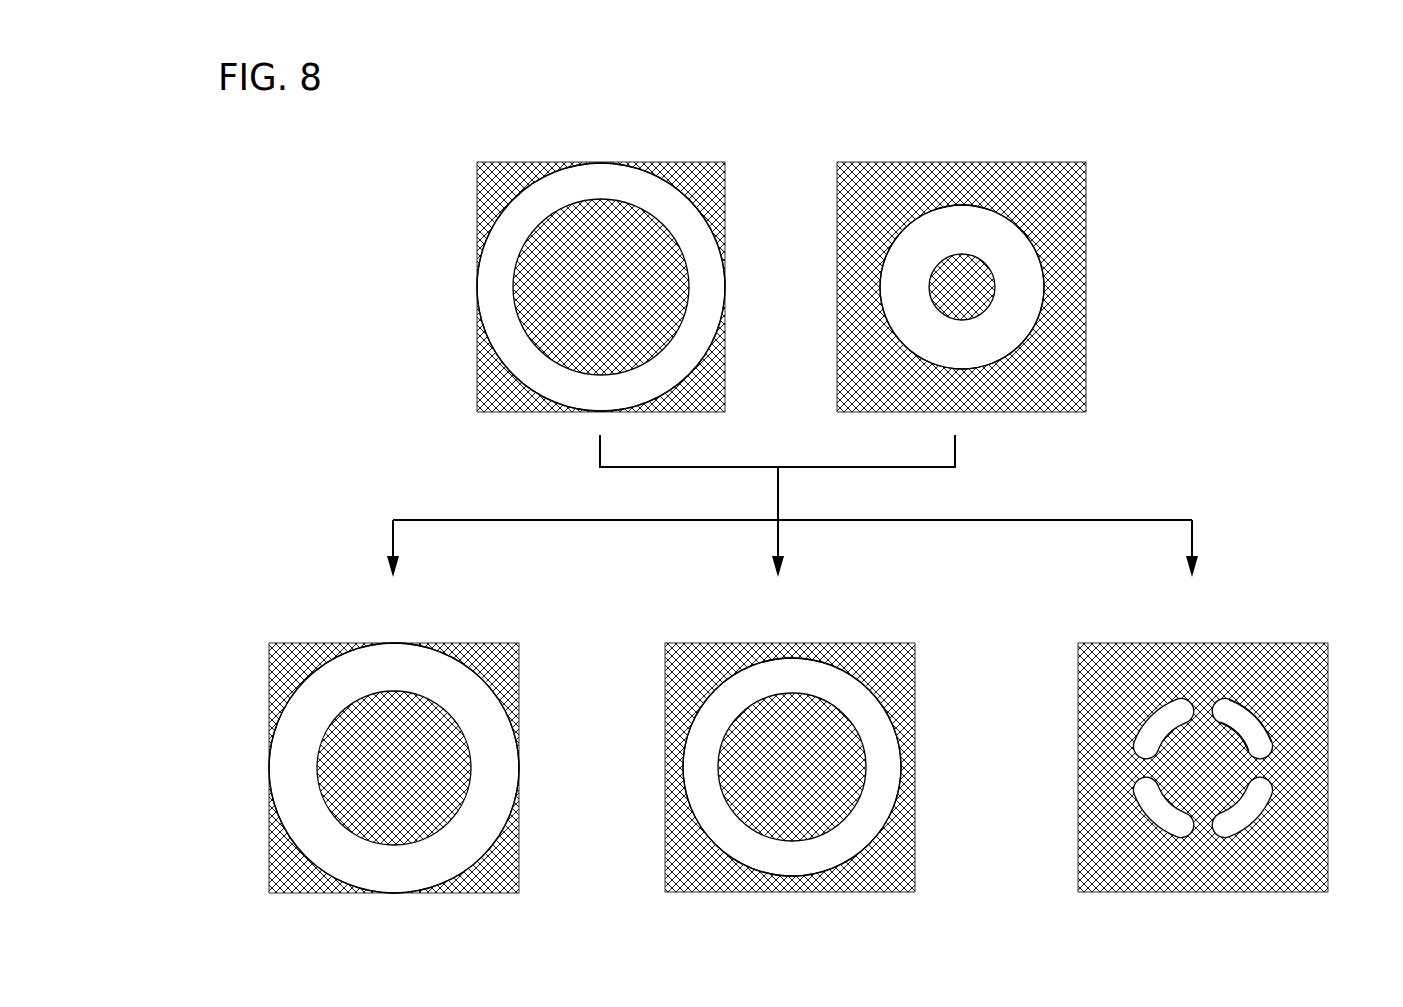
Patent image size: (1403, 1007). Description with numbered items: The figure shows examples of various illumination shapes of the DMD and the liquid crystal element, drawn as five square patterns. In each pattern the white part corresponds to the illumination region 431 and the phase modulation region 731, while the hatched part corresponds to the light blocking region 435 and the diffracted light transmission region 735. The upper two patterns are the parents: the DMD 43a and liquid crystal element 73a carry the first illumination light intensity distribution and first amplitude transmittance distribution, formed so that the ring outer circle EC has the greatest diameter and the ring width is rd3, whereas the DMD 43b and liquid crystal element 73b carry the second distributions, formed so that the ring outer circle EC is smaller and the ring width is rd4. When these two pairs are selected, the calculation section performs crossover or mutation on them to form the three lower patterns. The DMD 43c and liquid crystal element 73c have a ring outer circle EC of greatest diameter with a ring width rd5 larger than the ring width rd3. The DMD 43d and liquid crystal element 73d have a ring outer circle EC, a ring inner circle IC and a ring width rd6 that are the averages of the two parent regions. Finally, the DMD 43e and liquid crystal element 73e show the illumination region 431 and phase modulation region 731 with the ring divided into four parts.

The DMD 43a is at (601, 238).
The liquid crystal element 73a is at (667, 97).
The DMD 43b is at (961, 238).
The liquid crystal element 73b is at (1010, 97).
The DMD 43c is at (373, 733).
The liquid crystal element 73c is at (358, 606).
The DMD 43d is at (759, 731).
The liquid crystal element 73d is at (735, 604).
The DMD 43e is at (1173, 731).
The liquid crystal element 73e is at (1148, 604).
The illumination region 431 is at (829, 508).
The phase modulation region 731 is at (560, 190).
The light blocking region 435 is at (725, 545).
The diffracted light transmission region 735 is at (600, 287).
The ring outer circle EC is at (721, 232).
The ring inner circle IC is at (688, 287).
The ring width rd3 is at (540, 284).
The ring width rd4 is at (957, 284).
The ring width rd5 is at (345, 768).
The ring width rd6 is at (745, 764).